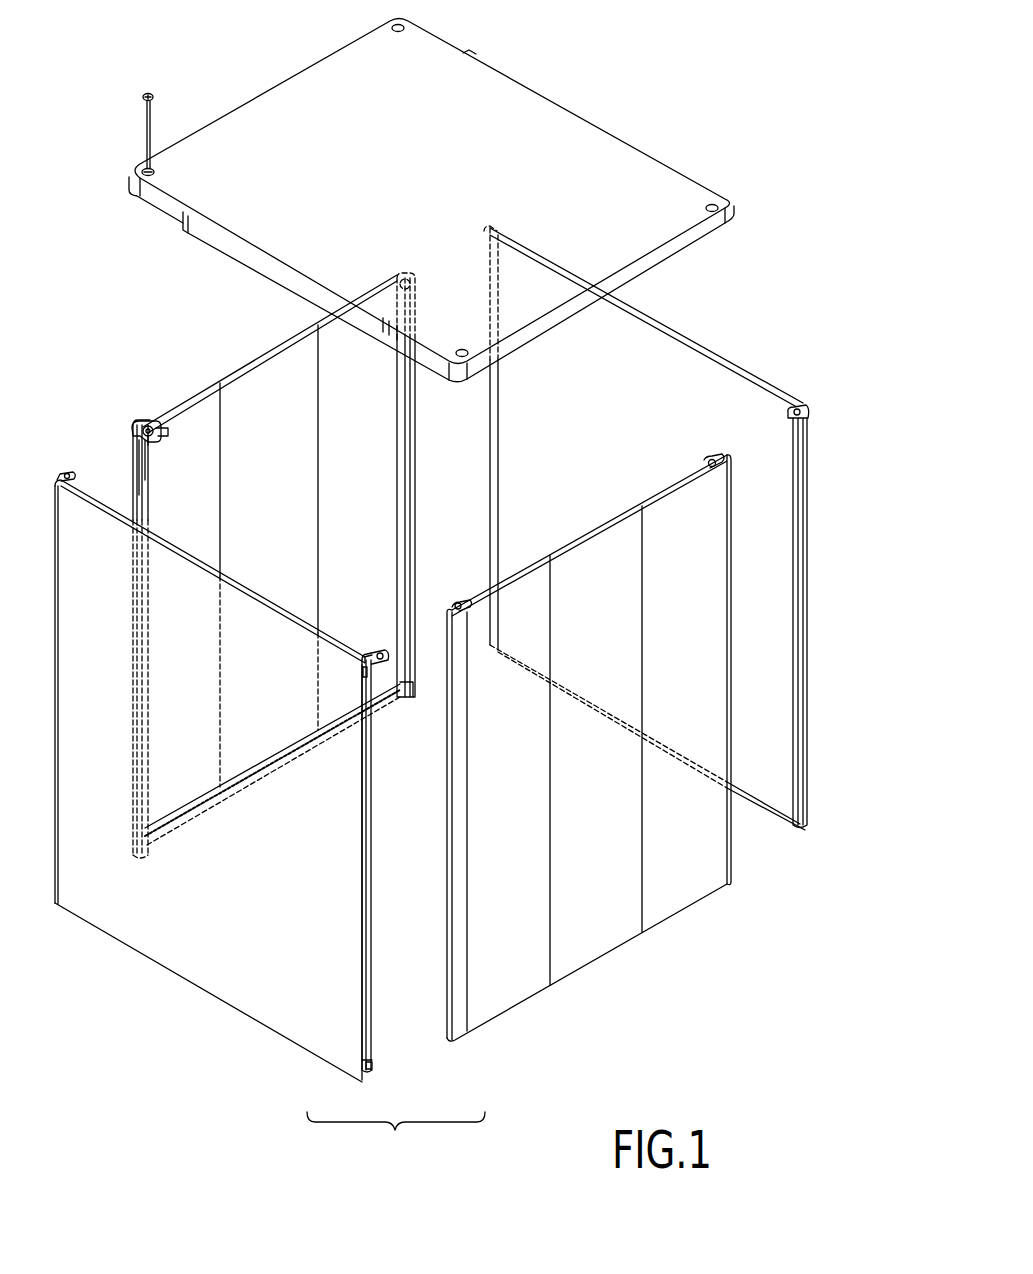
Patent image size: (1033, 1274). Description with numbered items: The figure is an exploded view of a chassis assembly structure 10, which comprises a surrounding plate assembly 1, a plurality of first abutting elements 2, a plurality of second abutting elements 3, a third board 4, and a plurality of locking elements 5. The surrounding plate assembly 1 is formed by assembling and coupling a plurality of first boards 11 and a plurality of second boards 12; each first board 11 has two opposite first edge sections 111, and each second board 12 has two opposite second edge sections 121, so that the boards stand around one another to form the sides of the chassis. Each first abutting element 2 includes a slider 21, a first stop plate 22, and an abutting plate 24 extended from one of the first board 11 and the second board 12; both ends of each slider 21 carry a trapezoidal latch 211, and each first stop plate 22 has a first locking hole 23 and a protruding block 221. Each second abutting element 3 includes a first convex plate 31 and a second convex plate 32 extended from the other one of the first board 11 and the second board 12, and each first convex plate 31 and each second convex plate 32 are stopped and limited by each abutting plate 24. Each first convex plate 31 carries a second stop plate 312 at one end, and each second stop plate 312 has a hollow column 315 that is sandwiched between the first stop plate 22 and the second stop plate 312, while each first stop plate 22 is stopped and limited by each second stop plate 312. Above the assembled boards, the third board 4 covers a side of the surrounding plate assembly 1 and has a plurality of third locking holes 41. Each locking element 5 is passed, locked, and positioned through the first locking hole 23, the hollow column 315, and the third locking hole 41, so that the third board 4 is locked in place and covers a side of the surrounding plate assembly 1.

The chassis assembly structure 10 is at (674, 27).
The surrounding plate assembly 1 is at (396, 1134).
The first board 11 is at (698, 377).
The first edge section 111 is at (65, 530).
The second board 12 is at (278, 378).
The second edge section 121 is at (458, 902).
The first abutting element 2 is at (806, 402).
The slider 21 is at (374, 1068).
The trapezoidal latch 211 is at (372, 1068).
The first stop plate 22 is at (383, 659).
The protruding block 221 is at (365, 668).
The first locking hole 23 is at (373, 653).
The abutting plate 24 is at (488, 457).
The second abutting element 3 is at (144, 416).
The first convex plate 31 is at (147, 476).
The second stop plate 312 is at (163, 432).
The hollow column 315 is at (150, 442).
The second convex plate 32 is at (142, 494).
The third board 4 is at (565, 117).
The third locking hole 41 is at (140, 166).
The locking element 5 is at (138, 102).